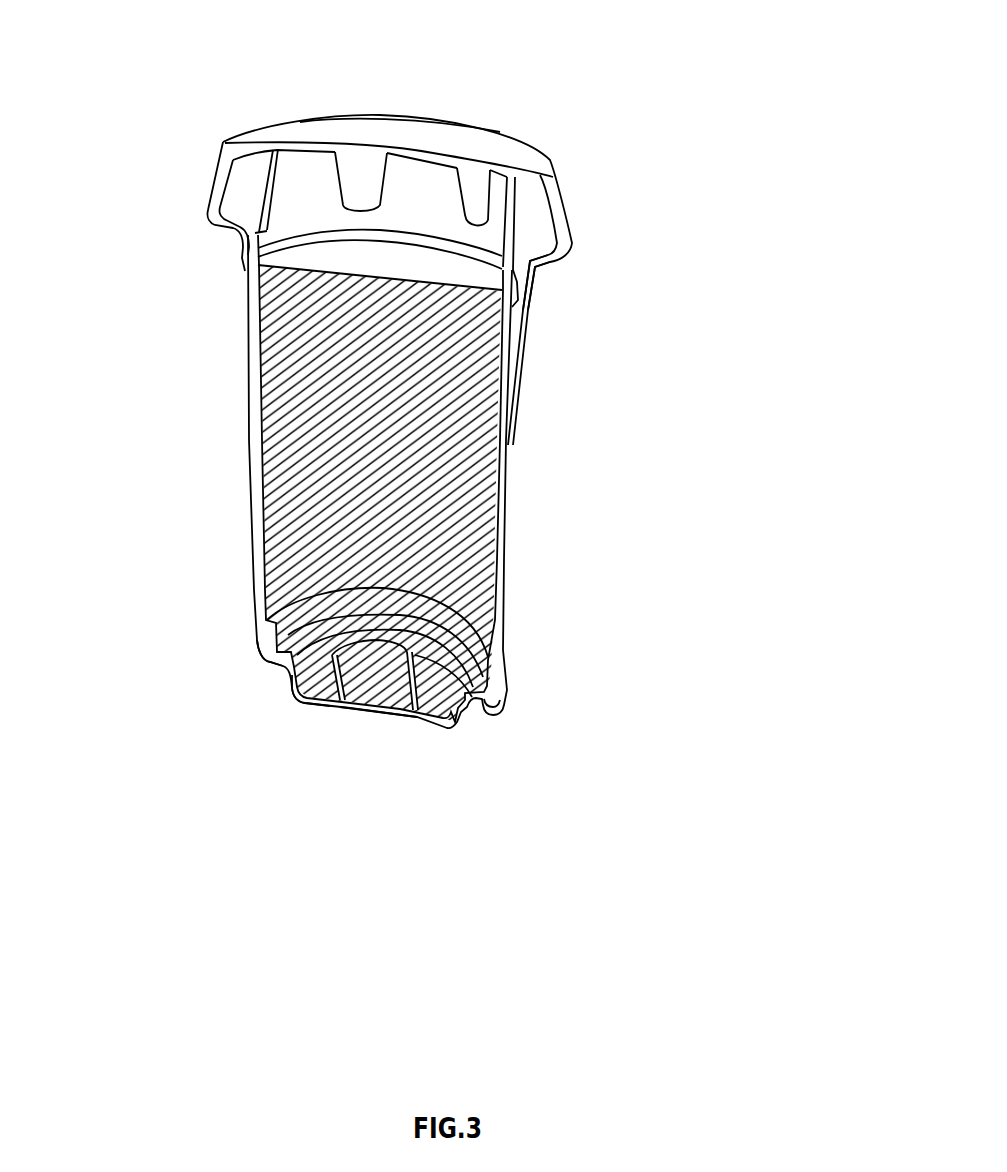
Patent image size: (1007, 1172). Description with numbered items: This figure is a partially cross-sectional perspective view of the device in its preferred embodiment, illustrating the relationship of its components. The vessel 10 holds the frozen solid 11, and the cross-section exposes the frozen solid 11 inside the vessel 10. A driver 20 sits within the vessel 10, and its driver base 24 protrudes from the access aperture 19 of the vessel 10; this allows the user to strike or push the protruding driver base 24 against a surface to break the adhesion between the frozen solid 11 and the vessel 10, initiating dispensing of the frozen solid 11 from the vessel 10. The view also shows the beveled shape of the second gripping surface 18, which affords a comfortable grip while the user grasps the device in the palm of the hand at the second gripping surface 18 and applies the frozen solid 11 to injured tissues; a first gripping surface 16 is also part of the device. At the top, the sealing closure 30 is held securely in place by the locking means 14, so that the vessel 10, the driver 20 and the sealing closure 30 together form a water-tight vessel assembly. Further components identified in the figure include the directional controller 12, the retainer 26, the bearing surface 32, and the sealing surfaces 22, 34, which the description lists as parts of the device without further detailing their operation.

The vessel 10 is at (458, 463).
The frozen solid 11 is at (315, 502).
The directional controller 12 is at (515, 217).
The locking means 14 is at (247, 257).
The first gripping surface 16 is at (507, 505).
The second gripping surface 18 is at (280, 662).
The access aperture 19 is at (328, 703).
The driver 20 is at (386, 715).
The sealing surface 22 is at (265, 637).
The driver base 24 is at (370, 710).
The retainer 26 is at (360, 645).
The sealing closure 30 is at (513, 137).
The bearing surface 32 is at (543, 265).
The sealing surface 34 is at (517, 305).